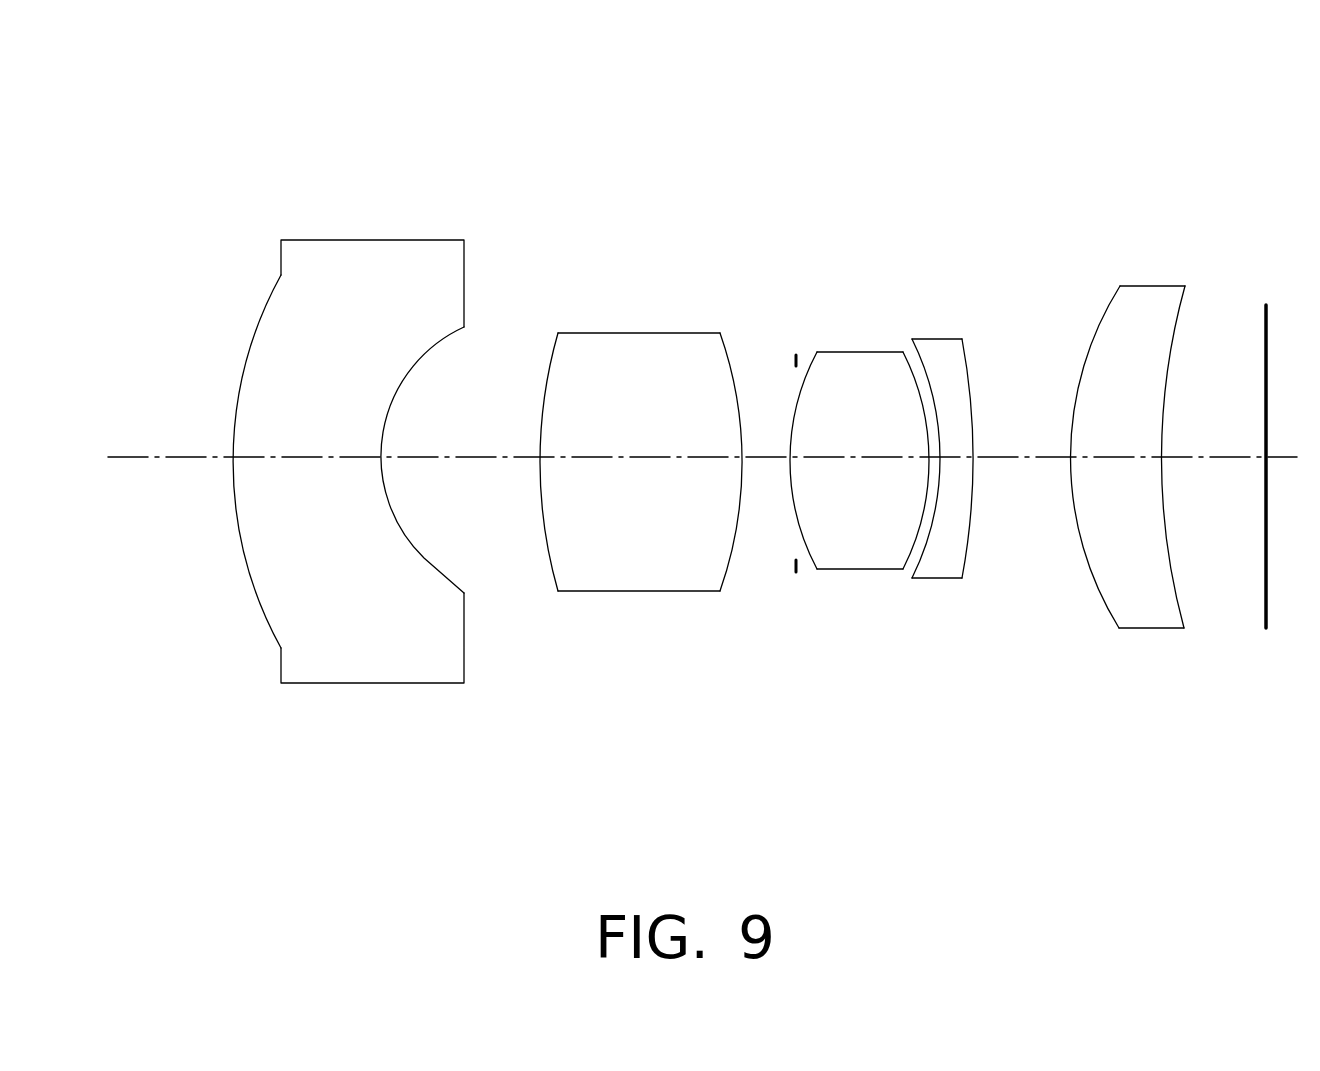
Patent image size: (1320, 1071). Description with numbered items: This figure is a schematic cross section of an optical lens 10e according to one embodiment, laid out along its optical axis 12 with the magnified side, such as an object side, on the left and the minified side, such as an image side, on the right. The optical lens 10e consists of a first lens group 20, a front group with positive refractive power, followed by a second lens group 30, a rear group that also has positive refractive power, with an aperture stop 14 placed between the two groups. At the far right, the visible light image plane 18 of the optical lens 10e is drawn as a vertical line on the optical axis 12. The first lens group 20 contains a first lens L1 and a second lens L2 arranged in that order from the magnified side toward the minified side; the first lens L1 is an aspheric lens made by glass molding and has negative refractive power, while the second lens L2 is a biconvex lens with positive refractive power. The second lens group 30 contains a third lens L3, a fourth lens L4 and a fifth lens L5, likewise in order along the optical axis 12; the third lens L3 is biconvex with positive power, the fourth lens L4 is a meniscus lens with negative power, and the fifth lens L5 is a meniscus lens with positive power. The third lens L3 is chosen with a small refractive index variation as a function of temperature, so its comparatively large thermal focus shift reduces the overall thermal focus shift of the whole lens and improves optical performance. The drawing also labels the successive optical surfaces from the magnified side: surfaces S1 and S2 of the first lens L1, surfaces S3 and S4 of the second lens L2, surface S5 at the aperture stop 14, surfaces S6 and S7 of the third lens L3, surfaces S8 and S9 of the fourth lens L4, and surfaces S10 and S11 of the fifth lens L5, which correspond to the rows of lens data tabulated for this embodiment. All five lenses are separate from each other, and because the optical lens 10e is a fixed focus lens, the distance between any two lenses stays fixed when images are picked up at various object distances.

The optical lens 10e is at (174, 74).
The optical axis 12 is at (162, 457).
The aperture stop 14 is at (786, 460).
The visible light image plane 18 is at (1266, 580).
The first lens group 20 is at (375, 119).
The second lens group 30 is at (837, 138).
The first lens L1 is at (374, 502).
The second lens L2 is at (642, 463).
The third lens L3 is at (859, 468).
The fourth lens L4 is at (971, 462).
The fifth lens L5 is at (1135, 474).
The object-side surface of first lens S1 is at (267, 622).
The image-side surface of first lens S2 is at (418, 560).
The object-side surface of second lens S3 is at (545, 543).
The image-side surface of second lens S4 is at (735, 543).
The aperture stop surface S5 is at (796, 572).
The object-side surface of third lens S6 is at (810, 552).
The image-side surface of third lens S7 is at (910, 543).
The object-side surface of fourth lens S8 is at (925, 545).
The image-side surface of fourth lens S9 is at (962, 578).
The object-side surface of fifth lens S10 is at (1100, 592).
The image-side surface of fifth lens S11 is at (1173, 577).